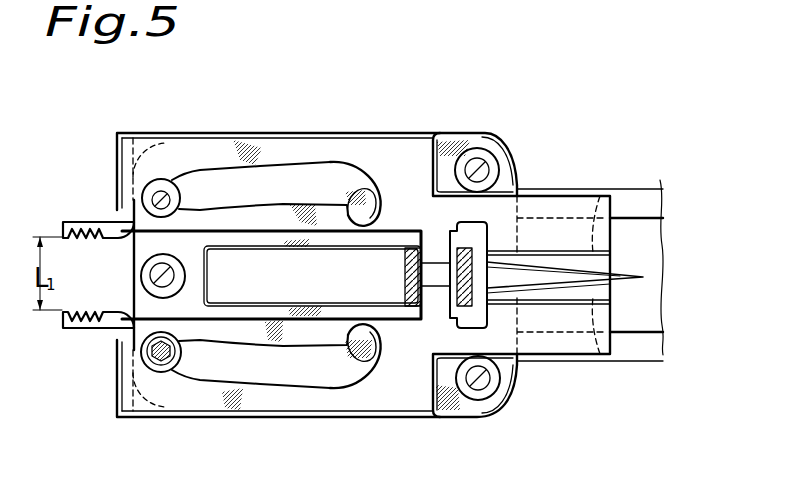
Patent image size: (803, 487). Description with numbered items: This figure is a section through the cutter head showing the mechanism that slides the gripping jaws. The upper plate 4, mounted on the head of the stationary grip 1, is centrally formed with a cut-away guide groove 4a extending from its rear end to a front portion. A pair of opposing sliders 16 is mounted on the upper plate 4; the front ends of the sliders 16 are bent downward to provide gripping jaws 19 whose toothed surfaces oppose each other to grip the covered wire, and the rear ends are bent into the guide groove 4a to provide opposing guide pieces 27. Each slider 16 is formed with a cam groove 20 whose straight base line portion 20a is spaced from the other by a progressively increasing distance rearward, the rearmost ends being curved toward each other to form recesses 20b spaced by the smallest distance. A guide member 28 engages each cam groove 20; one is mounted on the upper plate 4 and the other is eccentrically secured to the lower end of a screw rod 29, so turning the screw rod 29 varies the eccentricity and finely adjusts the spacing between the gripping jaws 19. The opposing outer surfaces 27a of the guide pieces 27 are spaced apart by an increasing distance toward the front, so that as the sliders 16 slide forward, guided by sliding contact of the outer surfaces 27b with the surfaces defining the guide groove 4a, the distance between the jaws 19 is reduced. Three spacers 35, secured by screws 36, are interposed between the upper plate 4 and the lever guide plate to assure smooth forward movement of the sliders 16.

The stationary grip 1 is at (648, 203).
The upper plate 4 is at (463, 417).
The guide groove 4a is at (316, 298).
The slider 16 is at (413, 405).
The gripping jaw 19 is at (93, 311).
The cam groove 20 is at (250, 372).
The base line portion 20a is at (305, 385).
The recess 20b is at (380, 355).
The guide piece 27 is at (553, 323).
The opposing outer surface 27a is at (643, 277).
The outer surface 27b is at (597, 345).
The guide member 28 is at (128, 366).
The screw rod 29 is at (168, 190).
The spacer 35 is at (147, 270).
The screw 36 is at (152, 282).